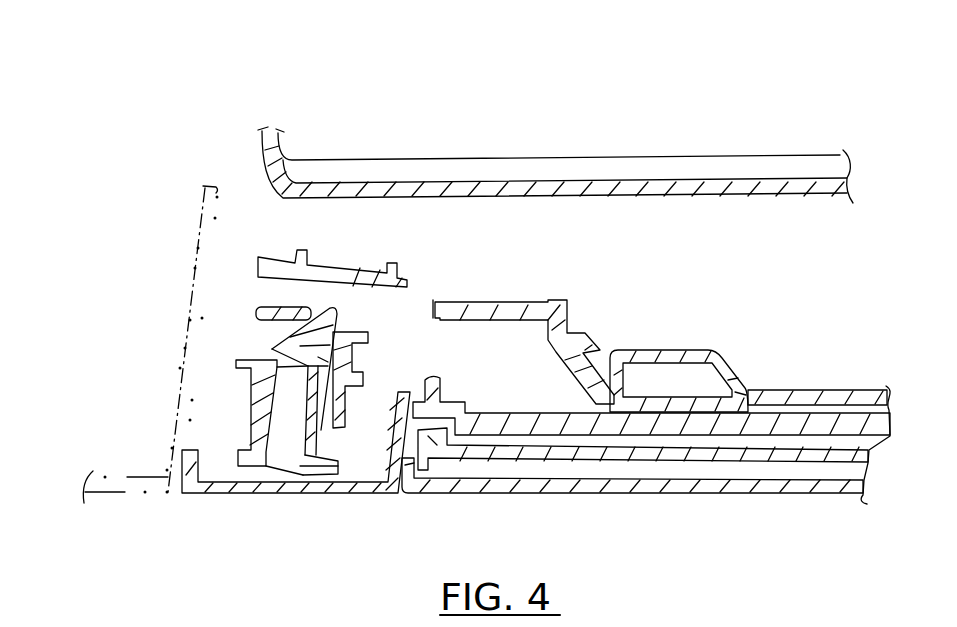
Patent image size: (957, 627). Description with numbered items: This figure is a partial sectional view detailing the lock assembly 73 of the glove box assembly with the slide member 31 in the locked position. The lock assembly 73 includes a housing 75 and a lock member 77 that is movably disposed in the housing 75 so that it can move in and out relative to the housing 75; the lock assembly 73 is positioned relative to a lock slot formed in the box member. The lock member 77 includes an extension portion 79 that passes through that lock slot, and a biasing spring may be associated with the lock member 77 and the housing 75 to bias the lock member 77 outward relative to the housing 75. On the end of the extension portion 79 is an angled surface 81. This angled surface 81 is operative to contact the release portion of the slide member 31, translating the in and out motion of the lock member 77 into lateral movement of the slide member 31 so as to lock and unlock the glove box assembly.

The slide member 31 is at (256, 314).
The lock assembly 73 is at (240, 432).
The housing 75 is at (256, 392).
The lock member 77 is at (288, 435).
The extension portion 79 is at (292, 353).
The angled surface 81 is at (290, 342).